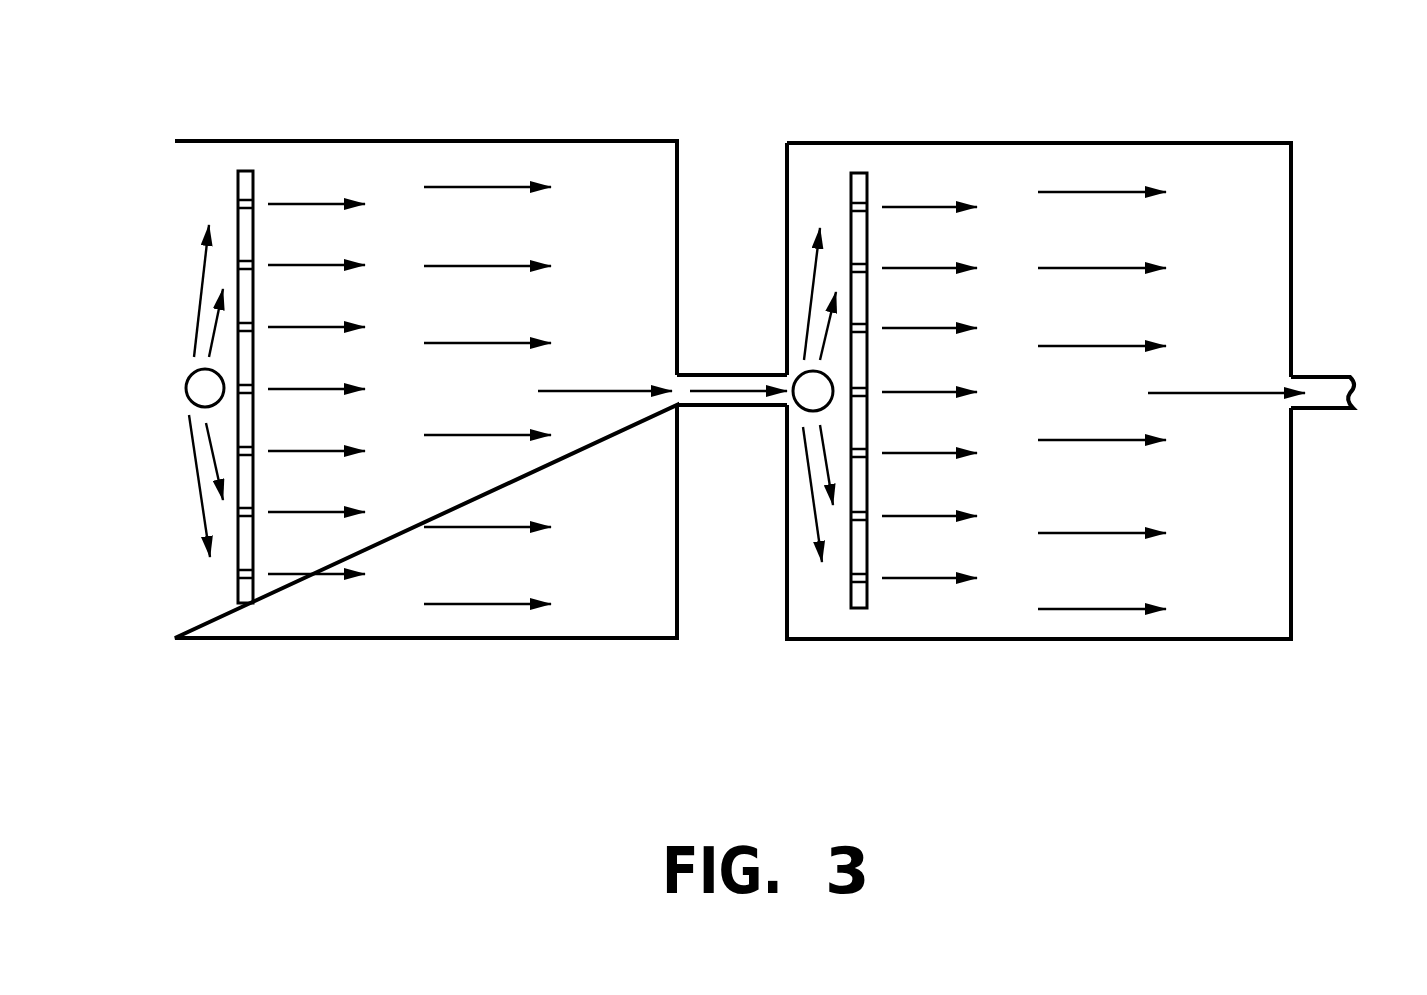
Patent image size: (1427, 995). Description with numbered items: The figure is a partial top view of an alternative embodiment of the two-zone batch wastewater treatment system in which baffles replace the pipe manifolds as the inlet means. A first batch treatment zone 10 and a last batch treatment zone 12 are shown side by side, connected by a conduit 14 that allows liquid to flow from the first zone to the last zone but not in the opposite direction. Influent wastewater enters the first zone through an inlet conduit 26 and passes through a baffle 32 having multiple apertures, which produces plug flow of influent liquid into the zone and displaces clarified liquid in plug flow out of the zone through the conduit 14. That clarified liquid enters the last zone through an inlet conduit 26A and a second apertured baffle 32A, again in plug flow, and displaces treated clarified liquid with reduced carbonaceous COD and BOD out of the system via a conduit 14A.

The first batch treatment zone 10 is at (292, 140).
The last batch treatment zone 12 is at (1030, 143).
The conduit 14 is at (768, 372).
The conduit 14A is at (1325, 377).
The conduit 26 is at (193, 372).
The conduit 26A is at (820, 410).
The baffle 32 is at (247, 171).
The baffle 32A is at (860, 173).